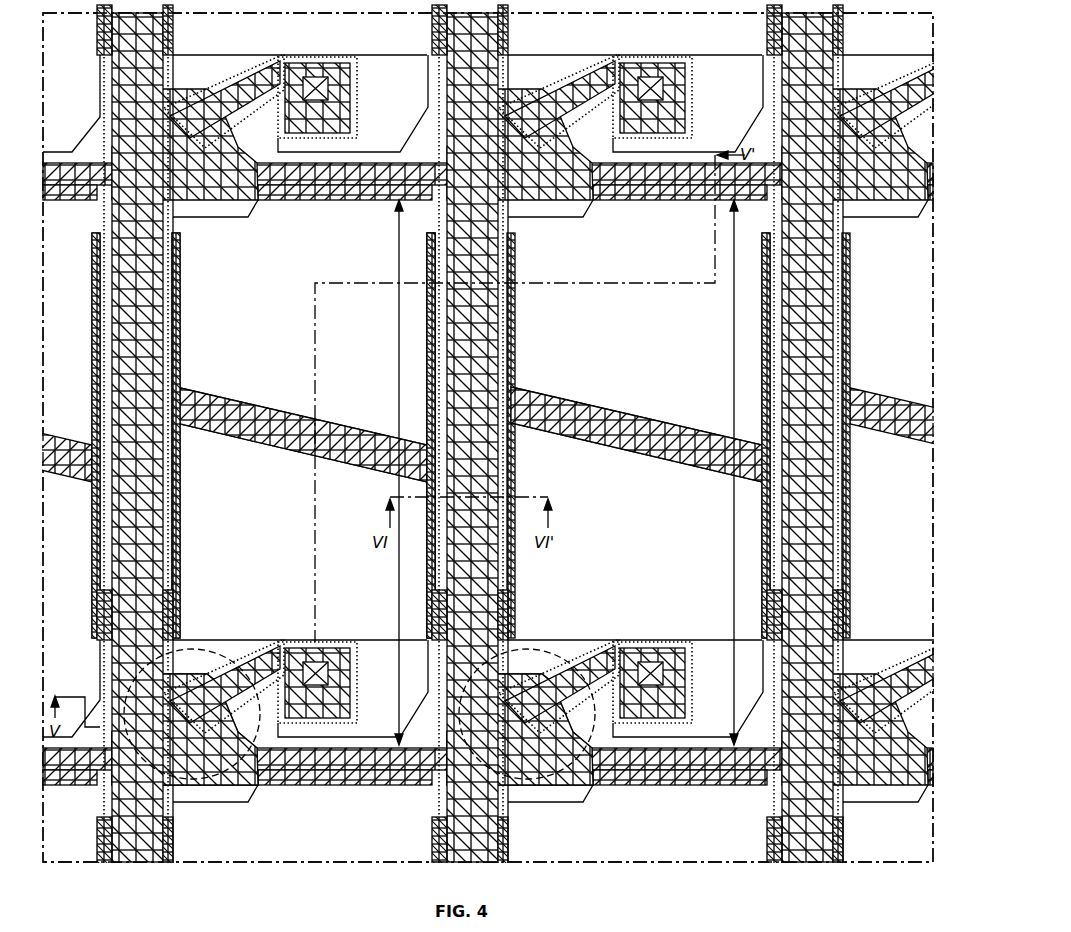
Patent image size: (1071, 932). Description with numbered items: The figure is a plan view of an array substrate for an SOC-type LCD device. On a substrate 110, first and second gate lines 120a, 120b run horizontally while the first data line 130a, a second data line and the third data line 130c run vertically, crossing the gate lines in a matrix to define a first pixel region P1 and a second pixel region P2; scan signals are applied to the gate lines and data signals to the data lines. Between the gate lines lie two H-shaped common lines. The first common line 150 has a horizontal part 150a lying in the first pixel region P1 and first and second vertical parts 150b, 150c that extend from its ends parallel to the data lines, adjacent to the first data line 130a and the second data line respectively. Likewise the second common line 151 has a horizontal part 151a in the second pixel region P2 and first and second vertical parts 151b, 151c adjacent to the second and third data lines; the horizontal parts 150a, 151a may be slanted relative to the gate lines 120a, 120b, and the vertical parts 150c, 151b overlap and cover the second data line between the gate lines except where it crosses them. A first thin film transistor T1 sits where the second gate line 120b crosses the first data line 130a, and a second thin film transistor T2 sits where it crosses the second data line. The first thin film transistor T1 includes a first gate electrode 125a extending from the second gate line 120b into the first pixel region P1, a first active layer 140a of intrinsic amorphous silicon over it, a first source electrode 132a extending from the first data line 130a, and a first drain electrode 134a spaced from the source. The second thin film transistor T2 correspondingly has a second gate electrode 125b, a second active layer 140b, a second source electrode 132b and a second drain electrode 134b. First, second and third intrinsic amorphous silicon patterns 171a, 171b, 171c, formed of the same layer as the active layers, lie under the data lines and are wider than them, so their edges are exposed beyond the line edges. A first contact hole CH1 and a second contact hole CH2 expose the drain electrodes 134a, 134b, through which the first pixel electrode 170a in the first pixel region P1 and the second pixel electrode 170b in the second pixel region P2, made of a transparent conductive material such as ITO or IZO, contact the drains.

The substrate 110 is at (745, 849).
The first gate line 120a is at (390, 172).
The second gate line 120b is at (600, 785).
The first gate electrode 125a is at (178, 690).
The second gate electrode 125b is at (513, 690).
The first data line 130a is at (118, 341).
The third data line 130c is at (834, 488).
The first source electrode 132a is at (200, 770).
The second source electrode 132b is at (535, 770).
The first drain electrode 134a is at (258, 690).
The second drain electrode 134b is at (593, 690).
The first active layer 140a is at (214, 690).
The second active layer 140b is at (549, 690).
The first common line 150 is at (317, 330).
The horizontal part 150a is at (258, 405).
The first vertical part 150b is at (182, 320).
The second vertical part 150c is at (427, 346).
The second common line 151 is at (646, 322).
The horizontal part 151a is at (593, 405).
The first vertical part 151b is at (517, 320).
The second vertical part 151c is at (762, 346).
The first pixel electrode 170a is at (350, 212).
The second pixel electrode 170b is at (680, 212).
The first intrinsic amorphous silicon pattern 171a is at (100, 573).
The second intrinsic amorphous silicon pattern 171b is at (425, 549).
The third intrinsic amorphous silicon pattern 171c is at (762, 532).
The first contact hole CH1 is at (314, 657).
The second contact hole CH2 is at (649, 657).
The first thin film transistor T1 is at (235, 655).
The second thin film transistor T2 is at (570, 655).
The first pixel region P1 is at (398, 472).
The second pixel region P2 is at (732, 472).